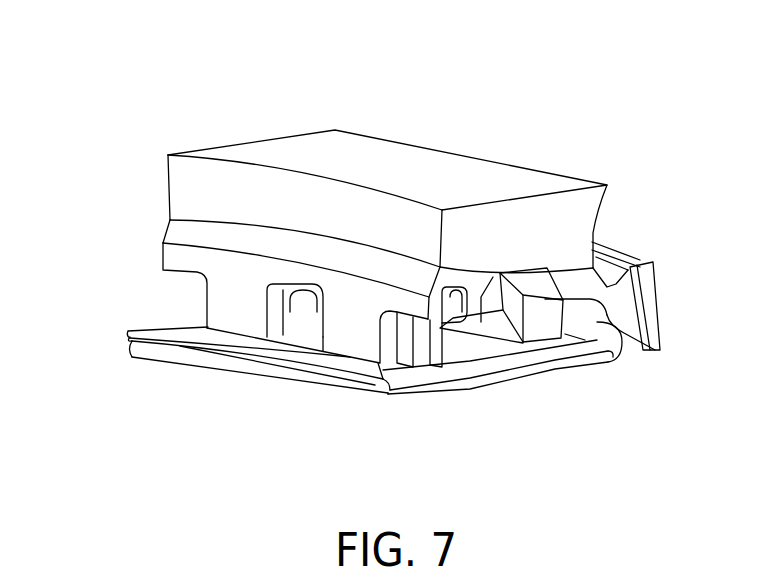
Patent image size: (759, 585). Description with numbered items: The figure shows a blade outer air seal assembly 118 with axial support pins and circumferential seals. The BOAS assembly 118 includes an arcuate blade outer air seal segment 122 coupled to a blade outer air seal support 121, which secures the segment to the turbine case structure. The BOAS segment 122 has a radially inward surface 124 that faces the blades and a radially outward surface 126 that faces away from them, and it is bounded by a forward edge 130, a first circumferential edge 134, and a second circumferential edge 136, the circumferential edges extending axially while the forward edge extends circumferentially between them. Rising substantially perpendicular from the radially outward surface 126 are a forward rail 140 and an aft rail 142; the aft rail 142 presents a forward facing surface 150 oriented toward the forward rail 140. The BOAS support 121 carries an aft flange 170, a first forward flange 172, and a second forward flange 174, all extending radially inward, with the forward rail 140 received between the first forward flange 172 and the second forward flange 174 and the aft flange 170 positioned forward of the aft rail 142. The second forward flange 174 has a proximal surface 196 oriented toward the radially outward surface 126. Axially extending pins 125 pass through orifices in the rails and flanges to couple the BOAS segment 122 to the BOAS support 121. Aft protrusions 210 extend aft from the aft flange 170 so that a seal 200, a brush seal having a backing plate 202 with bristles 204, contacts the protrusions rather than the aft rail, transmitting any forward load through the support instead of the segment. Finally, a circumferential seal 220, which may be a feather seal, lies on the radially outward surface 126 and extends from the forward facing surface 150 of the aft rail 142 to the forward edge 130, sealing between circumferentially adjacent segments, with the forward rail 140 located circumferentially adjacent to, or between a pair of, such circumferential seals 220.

The blade outer air seal assembly 118 is at (150, 115).
The blade outer air seal support 121 is at (392, 153).
The forward radially extending wall or rail 140 is at (301, 322).
The first forward flange 172 is at (450, 322).
The axially extending pin 125 is at (500, 303).
The forward facing surface of aft rail 150 is at (582, 318).
The seal 200 is at (640, 232).
The aft protrusion 210 is at (609, 283).
The backing plate 202 is at (638, 296).
The bristles 204 is at (650, 321).
The aft radially extending wall or rail 142 is at (640, 334).
The circumferential seal 220 is at (128, 329).
The second circumferential edge 136 is at (125, 341).
The forward edge 130 is at (248, 366).
The proximal surface 196 is at (343, 357).
The arcuate blade outer air seal segment 122 is at (377, 382).
The radially inward surface 124 is at (473, 392).
The first circumferential edge 134 is at (575, 377).
The second forward flange 174 is at (372, 321).
The aft flange 170 is at (557, 330).
The radially outward surface 126 is at (482, 360).